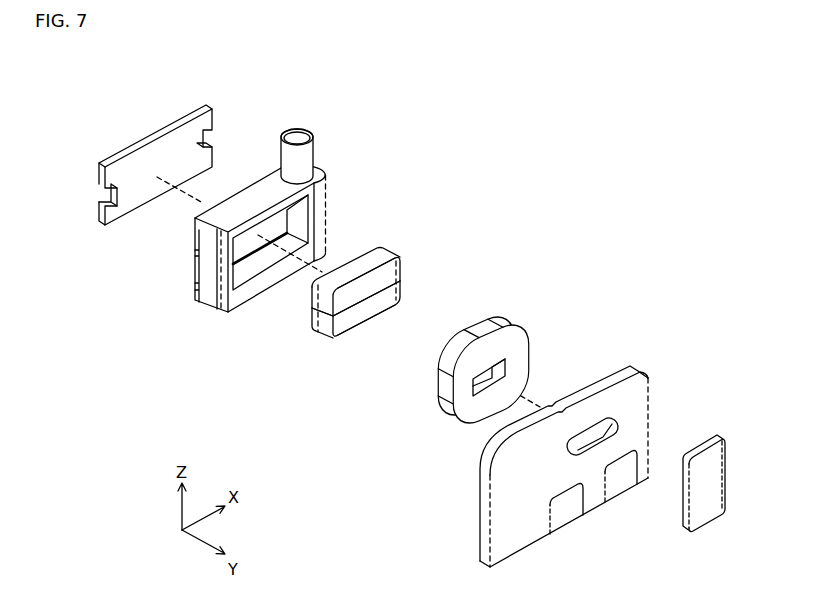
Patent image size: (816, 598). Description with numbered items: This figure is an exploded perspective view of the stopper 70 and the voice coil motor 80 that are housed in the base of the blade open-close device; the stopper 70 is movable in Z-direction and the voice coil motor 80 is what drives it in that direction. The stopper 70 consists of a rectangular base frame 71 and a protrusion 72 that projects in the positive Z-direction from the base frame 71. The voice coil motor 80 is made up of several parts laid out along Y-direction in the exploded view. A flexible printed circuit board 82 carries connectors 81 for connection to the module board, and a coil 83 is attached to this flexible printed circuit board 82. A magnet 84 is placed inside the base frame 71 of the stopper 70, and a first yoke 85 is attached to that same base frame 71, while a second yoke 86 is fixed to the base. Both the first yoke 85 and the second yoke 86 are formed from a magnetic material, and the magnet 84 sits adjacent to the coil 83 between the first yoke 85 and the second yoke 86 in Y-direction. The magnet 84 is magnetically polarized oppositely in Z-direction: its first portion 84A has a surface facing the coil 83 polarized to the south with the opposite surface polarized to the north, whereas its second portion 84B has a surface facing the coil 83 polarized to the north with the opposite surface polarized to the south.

The stopper 70 is at (315, 246).
The base frame 71 is at (204, 297).
The protrusion 72 is at (308, 158).
The voice coil motor 80 is at (560, 379).
The connectors 81 is at (568, 516).
The flexible printed circuit board 82 is at (633, 408).
The coil 83 is at (437, 390).
The magnet 84 is at (353, 314).
The first portion 84A is at (385, 273).
The second portion 84B is at (375, 308).
The first yoke 85 is at (155, 128).
The second yoke 86 is at (707, 515).